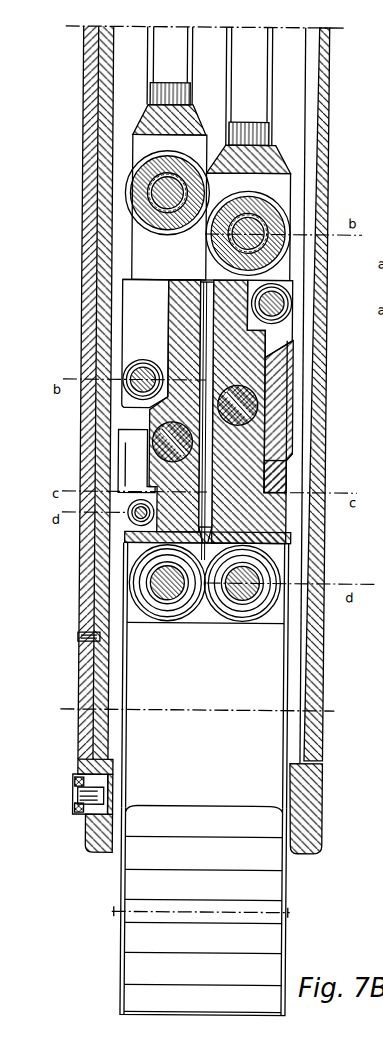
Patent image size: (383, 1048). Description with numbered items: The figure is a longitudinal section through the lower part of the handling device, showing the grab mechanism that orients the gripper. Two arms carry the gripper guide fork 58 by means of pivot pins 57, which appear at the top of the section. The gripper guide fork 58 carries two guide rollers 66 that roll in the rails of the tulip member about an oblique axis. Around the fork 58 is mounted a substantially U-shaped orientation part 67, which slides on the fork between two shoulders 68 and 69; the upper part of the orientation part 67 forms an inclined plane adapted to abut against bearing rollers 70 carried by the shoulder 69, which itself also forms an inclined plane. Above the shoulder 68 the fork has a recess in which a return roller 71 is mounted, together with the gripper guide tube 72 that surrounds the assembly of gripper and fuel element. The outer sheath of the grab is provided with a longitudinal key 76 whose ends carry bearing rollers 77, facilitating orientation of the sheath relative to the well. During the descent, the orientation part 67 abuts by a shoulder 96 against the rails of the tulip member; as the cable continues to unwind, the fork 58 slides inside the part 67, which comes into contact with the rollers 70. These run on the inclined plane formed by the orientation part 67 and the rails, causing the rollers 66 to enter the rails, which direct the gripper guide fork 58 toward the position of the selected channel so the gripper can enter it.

The pivot pins 57 is at (203, 240).
The gripper guide fork 58 is at (154, 342).
The guide rollers 66 is at (157, 428).
The orientation part 67 is at (289, 414).
The shoulder 68 is at (288, 487).
The shoulder 69 is at (292, 333).
The bearing rollers 70 is at (292, 307).
The return roller 71 is at (128, 516).
The gripper guide tube 72 is at (126, 680).
The longitudinal key 76 is at (84, 338).
The bearing rollers 77 is at (75, 815).
The shoulder 96 is at (292, 456).